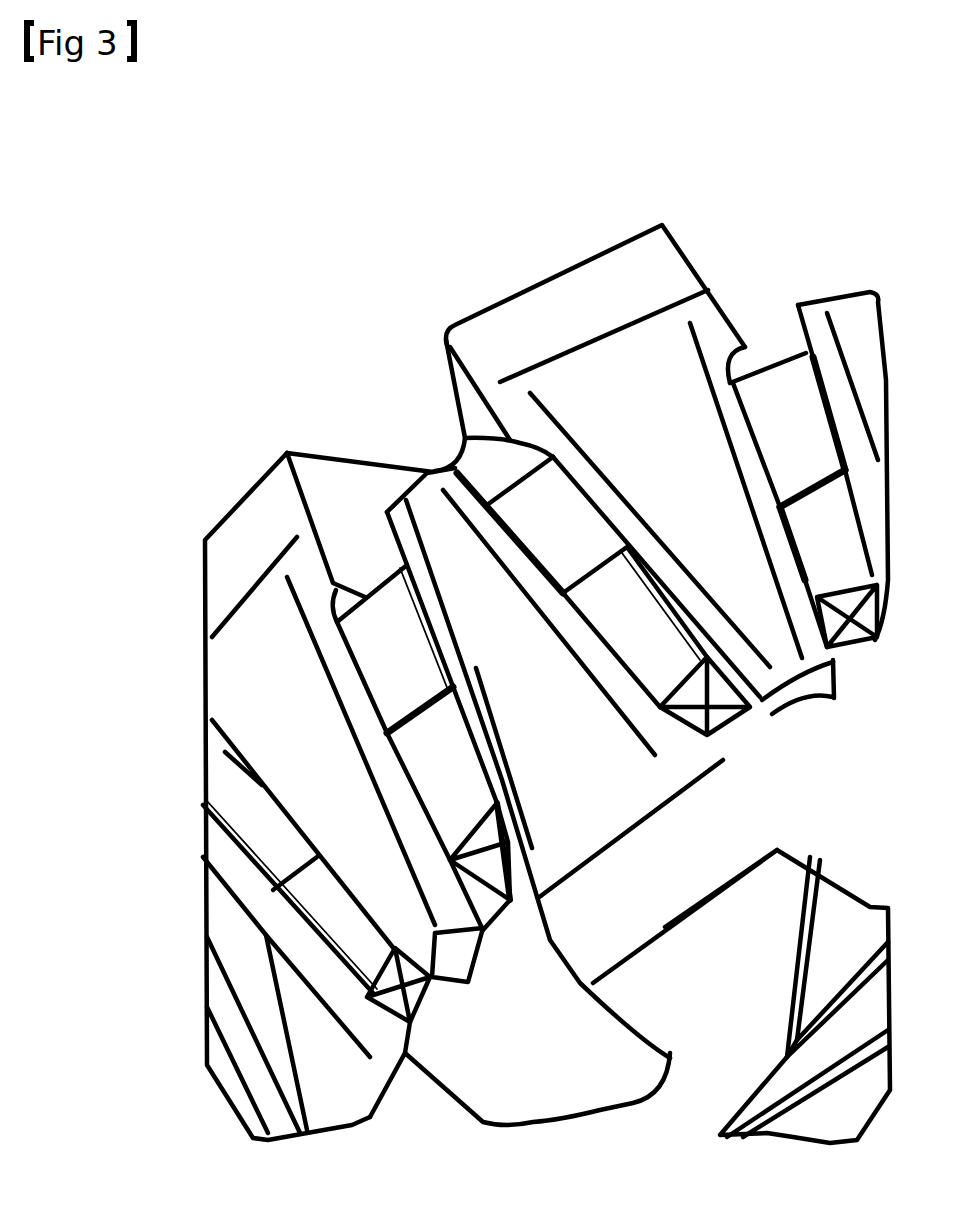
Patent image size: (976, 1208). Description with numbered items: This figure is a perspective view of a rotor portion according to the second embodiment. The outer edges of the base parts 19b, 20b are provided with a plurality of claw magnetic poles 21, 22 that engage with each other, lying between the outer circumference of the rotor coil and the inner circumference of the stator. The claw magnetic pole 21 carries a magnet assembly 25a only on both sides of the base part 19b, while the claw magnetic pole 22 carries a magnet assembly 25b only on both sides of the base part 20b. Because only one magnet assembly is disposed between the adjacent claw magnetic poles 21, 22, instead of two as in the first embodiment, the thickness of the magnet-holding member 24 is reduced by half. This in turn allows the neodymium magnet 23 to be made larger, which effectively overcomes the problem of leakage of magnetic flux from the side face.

The base part 19b is at (777, 996).
The base part 20b is at (319, 734).
The claw magnetic pole 21 is at (629, 675).
The claw magnetic pole 22 is at (494, 958).
The neodymium magnet 23 is at (622, 872).
The magnet-holding member 24 is at (817, 735).
The magnet assembly 25a is at (675, 709).
The magnet assembly 25b is at (537, 673).